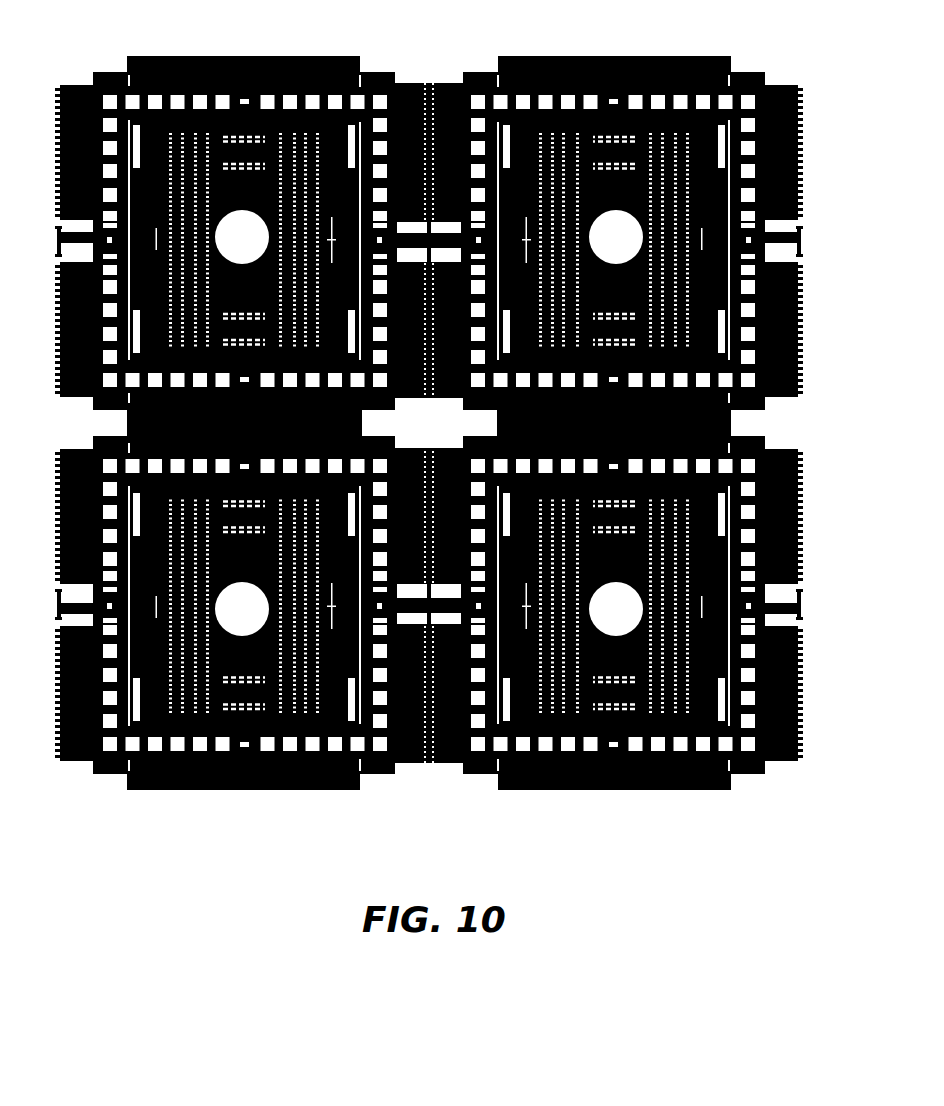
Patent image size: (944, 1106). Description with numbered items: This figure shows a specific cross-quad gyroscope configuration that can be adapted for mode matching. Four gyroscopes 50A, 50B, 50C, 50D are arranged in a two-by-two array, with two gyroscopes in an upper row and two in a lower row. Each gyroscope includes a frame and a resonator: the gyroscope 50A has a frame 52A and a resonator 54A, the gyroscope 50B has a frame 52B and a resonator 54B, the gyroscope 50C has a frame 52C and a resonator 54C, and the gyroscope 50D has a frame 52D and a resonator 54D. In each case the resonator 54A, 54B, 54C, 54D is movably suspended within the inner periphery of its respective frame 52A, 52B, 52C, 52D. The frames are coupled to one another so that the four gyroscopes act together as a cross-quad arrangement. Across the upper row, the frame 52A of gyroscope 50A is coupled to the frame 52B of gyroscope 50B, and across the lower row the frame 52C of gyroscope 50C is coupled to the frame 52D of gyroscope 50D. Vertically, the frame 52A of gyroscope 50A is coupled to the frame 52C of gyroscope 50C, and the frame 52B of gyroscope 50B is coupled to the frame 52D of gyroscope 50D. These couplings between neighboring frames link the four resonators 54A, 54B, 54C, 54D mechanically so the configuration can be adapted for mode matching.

The gyroscope 50A is at (225, 219).
The gyroscope 50B is at (633, 219).
The gyroscope 50C is at (225, 629).
The gyroscope 50D is at (633, 629).
The frame 52A is at (380, 70).
The frame 52B is at (476, 70).
The frame 52C is at (390, 778).
The frame 52D is at (478, 778).
The resonator 54A is at (242, 237).
The resonator 54B is at (616, 237).
The resonator 54C is at (242, 609).
The resonator 54D is at (616, 609).